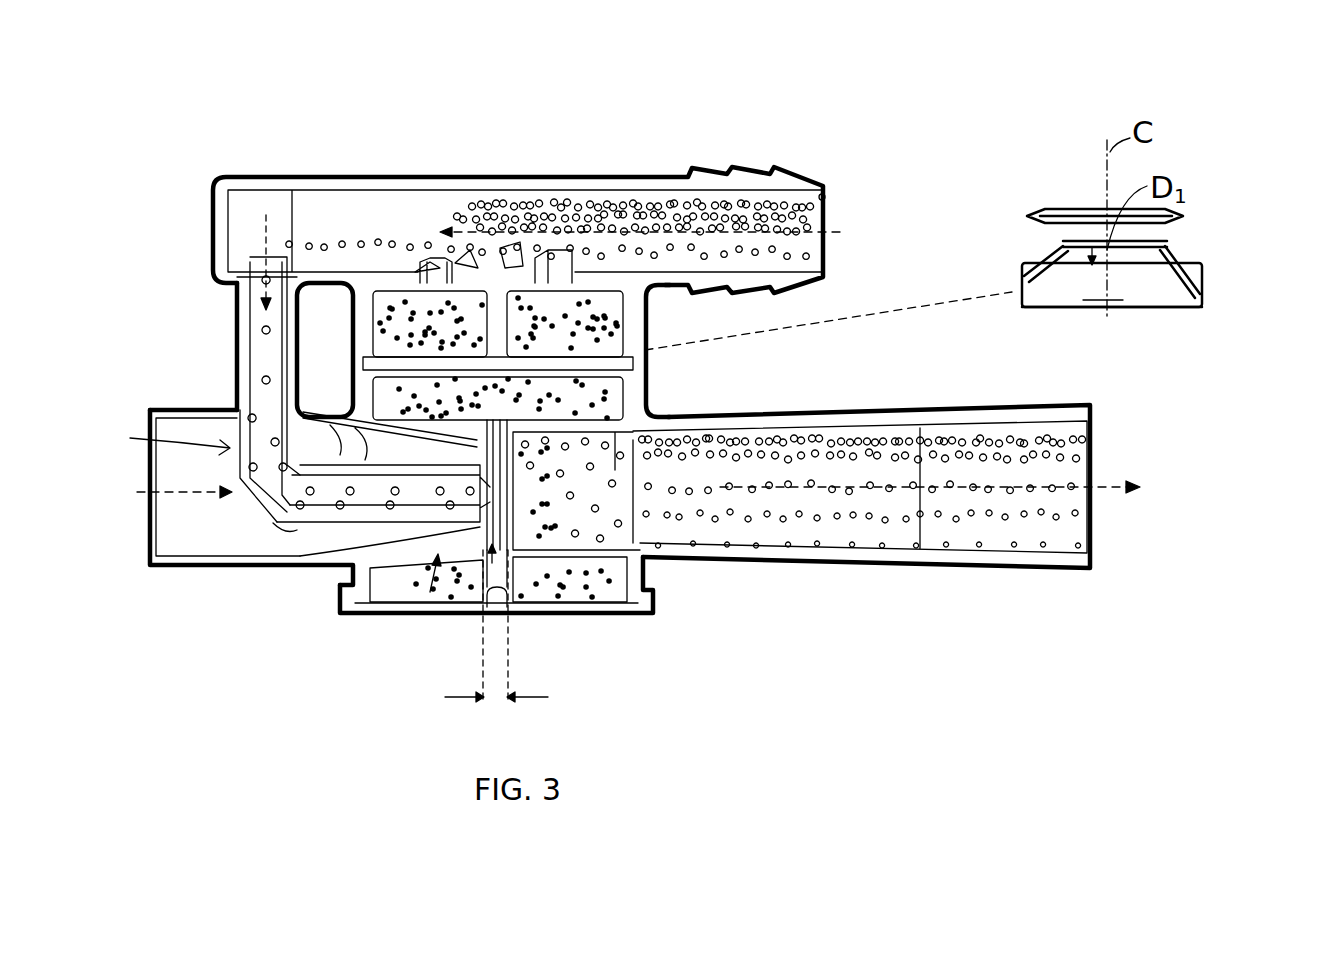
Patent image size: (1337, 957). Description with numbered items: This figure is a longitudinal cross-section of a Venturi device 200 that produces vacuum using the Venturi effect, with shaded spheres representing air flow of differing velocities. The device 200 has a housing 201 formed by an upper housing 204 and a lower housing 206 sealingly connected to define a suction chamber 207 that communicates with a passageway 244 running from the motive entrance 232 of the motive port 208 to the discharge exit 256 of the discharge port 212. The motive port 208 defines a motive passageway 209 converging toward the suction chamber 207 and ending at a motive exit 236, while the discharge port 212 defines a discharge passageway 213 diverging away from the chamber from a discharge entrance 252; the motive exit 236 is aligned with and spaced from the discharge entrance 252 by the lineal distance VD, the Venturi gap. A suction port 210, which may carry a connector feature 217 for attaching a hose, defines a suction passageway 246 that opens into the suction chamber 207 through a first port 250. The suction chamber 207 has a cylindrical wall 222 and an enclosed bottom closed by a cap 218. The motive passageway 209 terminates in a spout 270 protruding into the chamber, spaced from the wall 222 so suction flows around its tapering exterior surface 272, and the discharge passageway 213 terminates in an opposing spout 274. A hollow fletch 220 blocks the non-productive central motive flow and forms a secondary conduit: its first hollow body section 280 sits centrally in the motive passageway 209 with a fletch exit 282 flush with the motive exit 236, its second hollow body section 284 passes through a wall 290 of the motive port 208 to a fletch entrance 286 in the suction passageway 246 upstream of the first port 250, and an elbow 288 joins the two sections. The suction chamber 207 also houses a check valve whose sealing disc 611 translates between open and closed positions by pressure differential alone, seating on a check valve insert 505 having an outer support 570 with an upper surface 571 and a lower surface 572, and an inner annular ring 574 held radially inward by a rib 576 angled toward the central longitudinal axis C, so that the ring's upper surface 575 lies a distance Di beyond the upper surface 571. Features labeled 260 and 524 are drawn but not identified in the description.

The Venturi device 200 is at (524, 82).
The housing 201 is at (455, 176).
The upper housing 204 is at (645, 150).
The lower housing 206 is at (798, 385).
The suction chamber 207 is at (643, 390).
The motive port 208 is at (163, 570).
The motive passageway 209 is at (350, 560).
The suction port 210 is at (822, 194).
The discharge port 212 is at (1080, 573).
The discharge passageway 213 is at (800, 533).
The connector feature 217 is at (735, 168).
The cap 218 is at (553, 613).
The hollow fletch 220 is at (150, 445).
The cylindrical wall 222 is at (647, 573).
The motive entrance 232 is at (143, 543).
The motive exit 236 is at (520, 537).
The passageway 244 is at (177, 510).
The suction passageway 246 is at (343, 193).
The first port 250 is at (427, 263).
The discharge entrance 252 is at (498, 447).
The discharge exit 256 is at (1093, 520).
The nozzle throat 260 is at (473, 593).
The spout 270 is at (400, 600).
The exterior surface 272 is at (428, 595).
The spout 274 is at (557, 413).
The first hollow body section 280 is at (330, 540).
The fletch exit 282 is at (490, 508).
The second hollow body section 284 is at (237, 365).
The fletch entrance 286 is at (237, 286).
The elbow 288 is at (257, 498).
The wall 290 is at (163, 405).
The check valve insert 505 is at (1200, 280).
The membrane cap 524 is at (1048, 240).
The outer support 570 is at (1112, 285).
The upper surface 571 is at (1042, 256).
The lower surface 572 is at (1187, 307).
The inner annular ring 574 is at (1183, 236).
The upper surface 575 is at (1078, 229).
The rib 576 is at (1180, 262).
The sealing disc 611 is at (1185, 217).